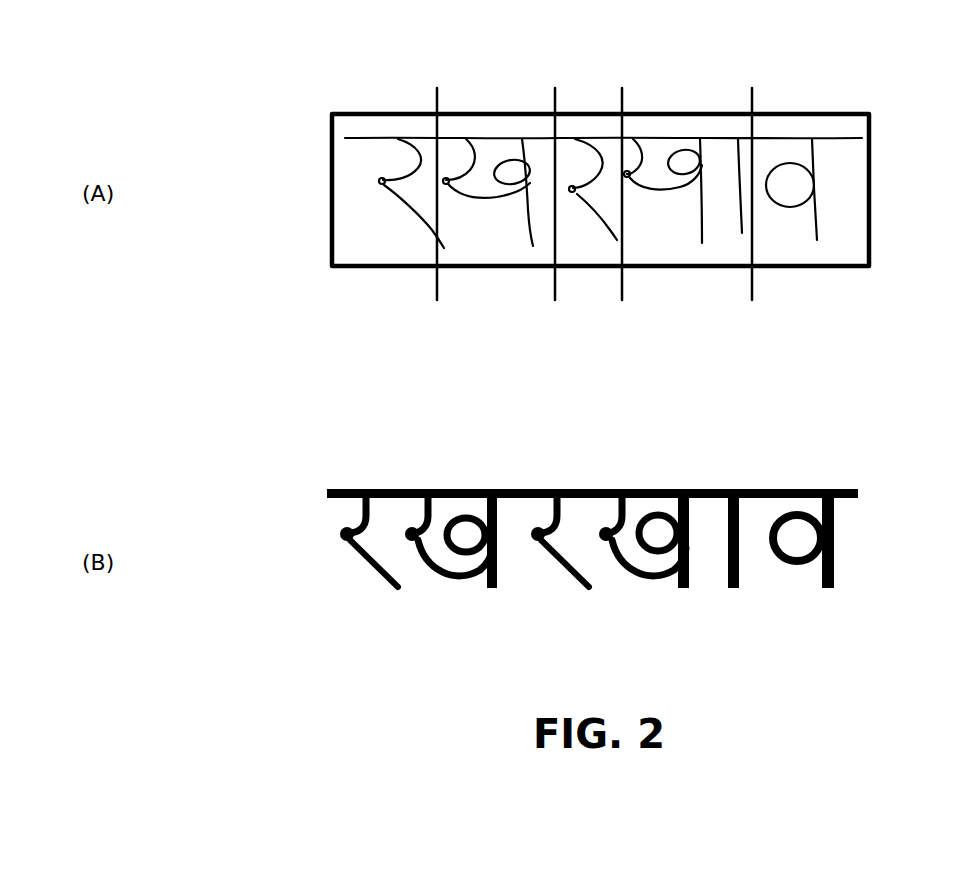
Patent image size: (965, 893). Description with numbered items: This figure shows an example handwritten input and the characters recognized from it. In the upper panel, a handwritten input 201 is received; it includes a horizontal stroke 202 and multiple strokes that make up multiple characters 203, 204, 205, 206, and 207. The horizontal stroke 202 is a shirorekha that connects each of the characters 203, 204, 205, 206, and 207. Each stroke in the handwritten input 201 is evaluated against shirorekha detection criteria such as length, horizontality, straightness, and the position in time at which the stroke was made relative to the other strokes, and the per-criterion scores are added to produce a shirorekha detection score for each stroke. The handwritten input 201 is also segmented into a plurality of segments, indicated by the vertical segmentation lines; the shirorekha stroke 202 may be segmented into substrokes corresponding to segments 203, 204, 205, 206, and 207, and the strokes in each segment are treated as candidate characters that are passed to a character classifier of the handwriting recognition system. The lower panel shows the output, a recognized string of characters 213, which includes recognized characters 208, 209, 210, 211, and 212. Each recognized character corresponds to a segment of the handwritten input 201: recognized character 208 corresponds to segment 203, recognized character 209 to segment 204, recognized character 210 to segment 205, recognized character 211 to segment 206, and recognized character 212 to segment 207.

The handwritten input 201 is at (333, 205).
The horizontal stroke 202 is at (358, 137).
The character 203 is at (383, 137).
The character 204 is at (490, 140).
The character 205 is at (593, 140).
The character 206 is at (673, 137).
The character 207 is at (805, 138).
The recognized character 208 is at (348, 548).
The recognized character 209 is at (437, 577).
The recognized character 210 is at (568, 577).
The recognized character 211 is at (683, 590).
The recognized character 212 is at (805, 567).
The recognized string of characters 213 is at (305, 522).